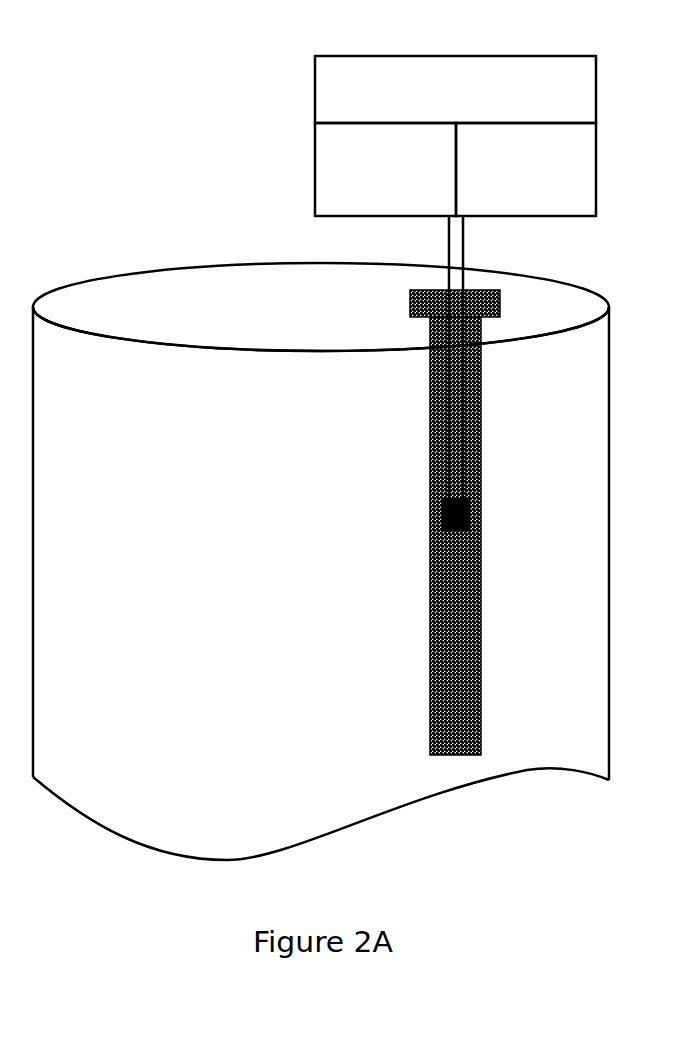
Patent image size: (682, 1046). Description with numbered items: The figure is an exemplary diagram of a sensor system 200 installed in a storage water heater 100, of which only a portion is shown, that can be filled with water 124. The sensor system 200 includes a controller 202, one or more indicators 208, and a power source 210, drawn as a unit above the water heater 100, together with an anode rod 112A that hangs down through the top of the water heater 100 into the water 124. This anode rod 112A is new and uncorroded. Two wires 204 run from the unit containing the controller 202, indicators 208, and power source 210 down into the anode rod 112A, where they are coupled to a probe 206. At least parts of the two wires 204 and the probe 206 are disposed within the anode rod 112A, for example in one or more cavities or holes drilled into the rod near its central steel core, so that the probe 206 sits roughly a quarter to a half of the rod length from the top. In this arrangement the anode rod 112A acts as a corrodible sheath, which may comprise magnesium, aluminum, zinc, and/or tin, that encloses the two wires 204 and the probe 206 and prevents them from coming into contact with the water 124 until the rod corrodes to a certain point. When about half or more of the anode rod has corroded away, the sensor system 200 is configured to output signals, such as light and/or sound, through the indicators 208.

The storage water heater 100 is at (388, 812).
The water 124 is at (321, 545).
The anode rod 112A is at (441, 663).
The two wires 204 is at (472, 255).
The probe 206 is at (442, 511).
The power source 210 is at (455, 89).
The indicators 208 is at (385, 169).
The controller 202 is at (526, 169).
The sensor system 200 is at (273, 215).